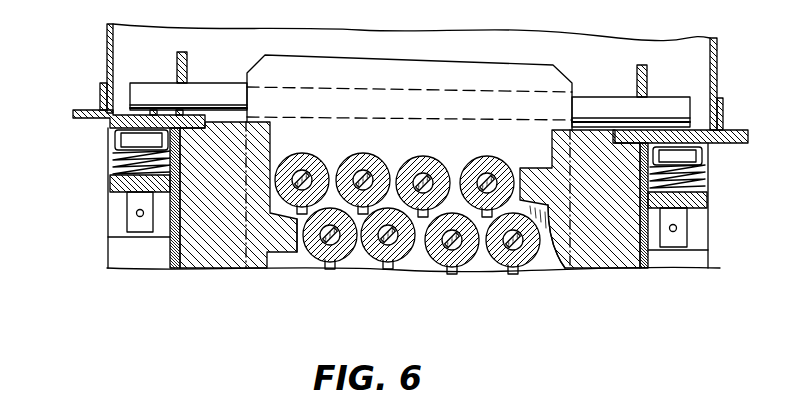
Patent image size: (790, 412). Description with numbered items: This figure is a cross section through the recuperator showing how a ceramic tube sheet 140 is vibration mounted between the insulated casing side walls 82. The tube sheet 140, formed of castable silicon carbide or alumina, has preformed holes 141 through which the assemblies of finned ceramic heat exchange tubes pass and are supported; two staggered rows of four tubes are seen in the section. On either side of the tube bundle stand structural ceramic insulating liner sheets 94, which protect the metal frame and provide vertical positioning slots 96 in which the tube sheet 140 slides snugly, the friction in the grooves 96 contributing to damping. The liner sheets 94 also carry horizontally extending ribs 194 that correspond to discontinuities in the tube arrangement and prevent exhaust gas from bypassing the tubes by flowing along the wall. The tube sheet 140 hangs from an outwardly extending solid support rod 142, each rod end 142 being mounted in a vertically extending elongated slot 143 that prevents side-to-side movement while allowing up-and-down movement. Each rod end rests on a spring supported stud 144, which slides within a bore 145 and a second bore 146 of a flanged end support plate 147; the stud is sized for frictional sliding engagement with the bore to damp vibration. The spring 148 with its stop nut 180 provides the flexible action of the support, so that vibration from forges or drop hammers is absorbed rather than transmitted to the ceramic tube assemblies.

The side wall 82 is at (172, 248).
The structural ceramic insulating liner sheet 94 is at (215, 262).
The vertical positioning slot 96 is at (245, 268).
The ceramic tube sheet 140 is at (537, 263).
The preformed hole 141 is at (500, 267).
The support rod 142 is at (672, 102).
The elongated slot 143 is at (180, 84).
The spring supported stud 144 is at (132, 205).
The bore 145 is at (110, 185).
The second bore 146 is at (98, 97).
The flanged end support plate 147 is at (168, 238).
The spring 148 is at (115, 160).
The stop nut 180 is at (120, 140).
The horizontally extending rib 194 is at (288, 252).